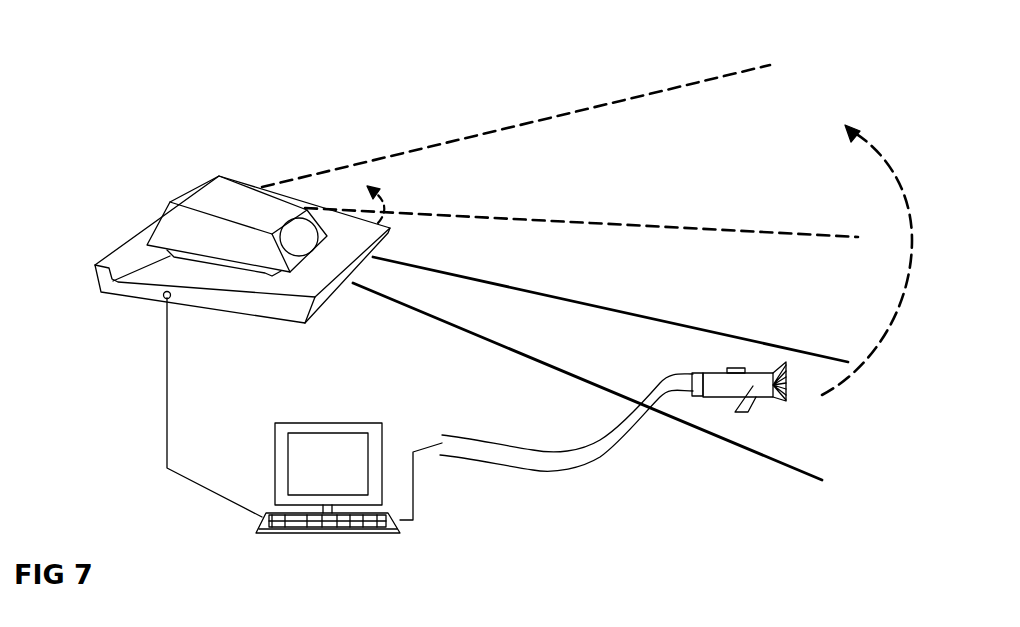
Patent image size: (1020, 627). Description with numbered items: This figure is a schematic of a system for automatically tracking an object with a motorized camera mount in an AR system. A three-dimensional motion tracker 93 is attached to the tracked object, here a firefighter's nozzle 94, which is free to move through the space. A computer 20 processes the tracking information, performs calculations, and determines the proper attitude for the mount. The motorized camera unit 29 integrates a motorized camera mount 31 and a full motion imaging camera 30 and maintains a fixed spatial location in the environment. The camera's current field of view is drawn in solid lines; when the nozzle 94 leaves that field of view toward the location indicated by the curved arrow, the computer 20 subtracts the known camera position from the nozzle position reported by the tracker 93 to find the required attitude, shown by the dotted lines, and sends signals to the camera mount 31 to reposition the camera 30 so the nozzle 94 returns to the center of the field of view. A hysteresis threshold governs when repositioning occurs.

The computer 20 is at (350, 420).
The motorized camera unit 29 is at (297, 200).
The full motion imaging camera 30 is at (227, 175).
The motorized camera mount 31 is at (95, 265).
The 3D motion tracker 93 is at (723, 363).
The firefighter's nozzle 94 is at (783, 400).